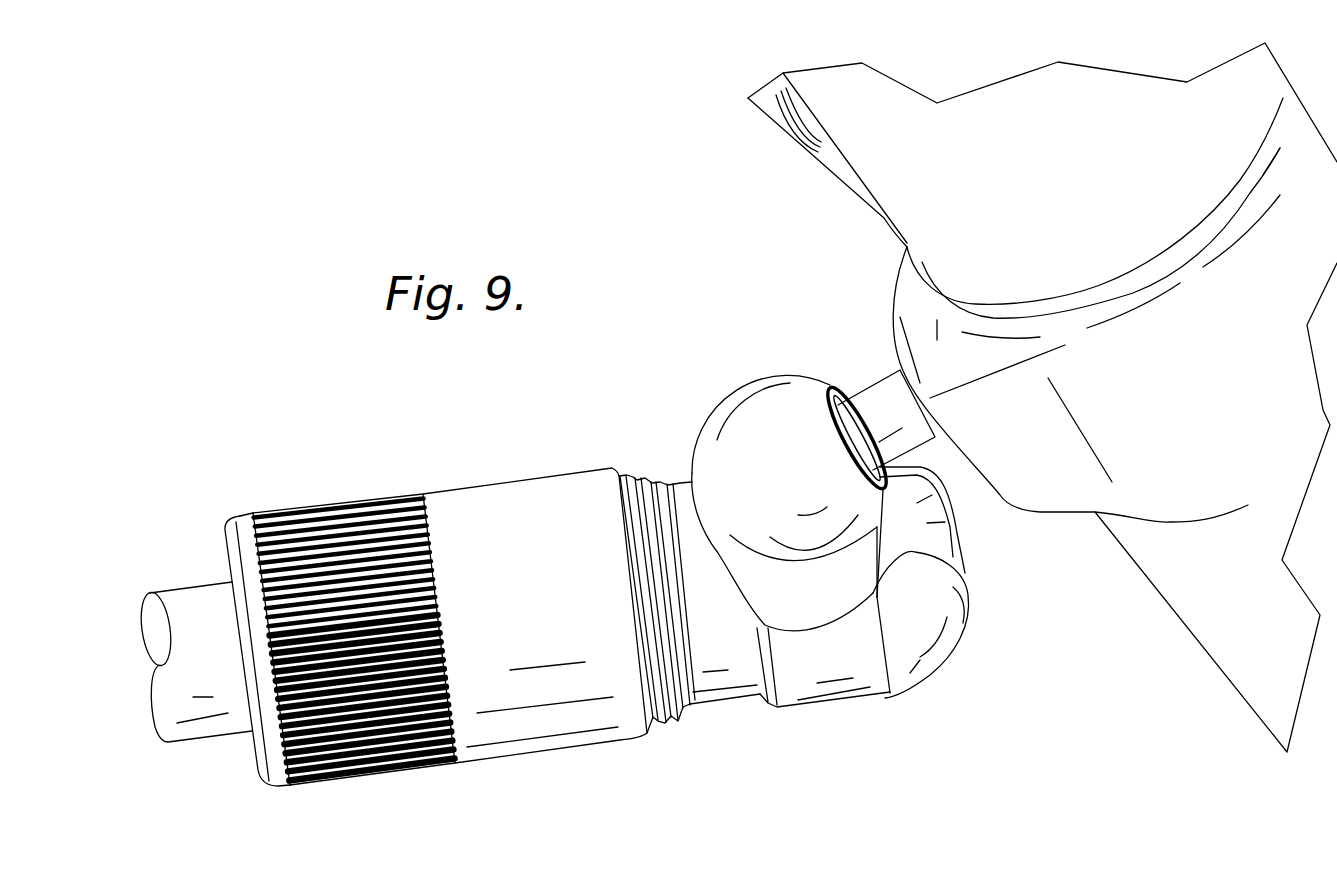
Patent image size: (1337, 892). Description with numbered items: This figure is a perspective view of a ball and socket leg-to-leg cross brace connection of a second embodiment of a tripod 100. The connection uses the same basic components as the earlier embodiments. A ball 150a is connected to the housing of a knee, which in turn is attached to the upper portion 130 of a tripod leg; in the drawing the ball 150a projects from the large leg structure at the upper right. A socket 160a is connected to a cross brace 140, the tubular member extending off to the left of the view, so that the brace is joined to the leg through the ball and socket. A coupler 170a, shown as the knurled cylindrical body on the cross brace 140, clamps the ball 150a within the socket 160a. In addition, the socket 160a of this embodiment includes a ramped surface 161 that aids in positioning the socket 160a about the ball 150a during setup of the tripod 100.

The housing 100 is at (1245, 397).
The upper portion of a leg 130 is at (1097, 147).
The cross brace 140 is at (212, 710).
The ball 150a is at (735, 440).
The socket 160a is at (920, 632).
The ramped surface 161 is at (780, 588).
The coupler 170a is at (597, 738).